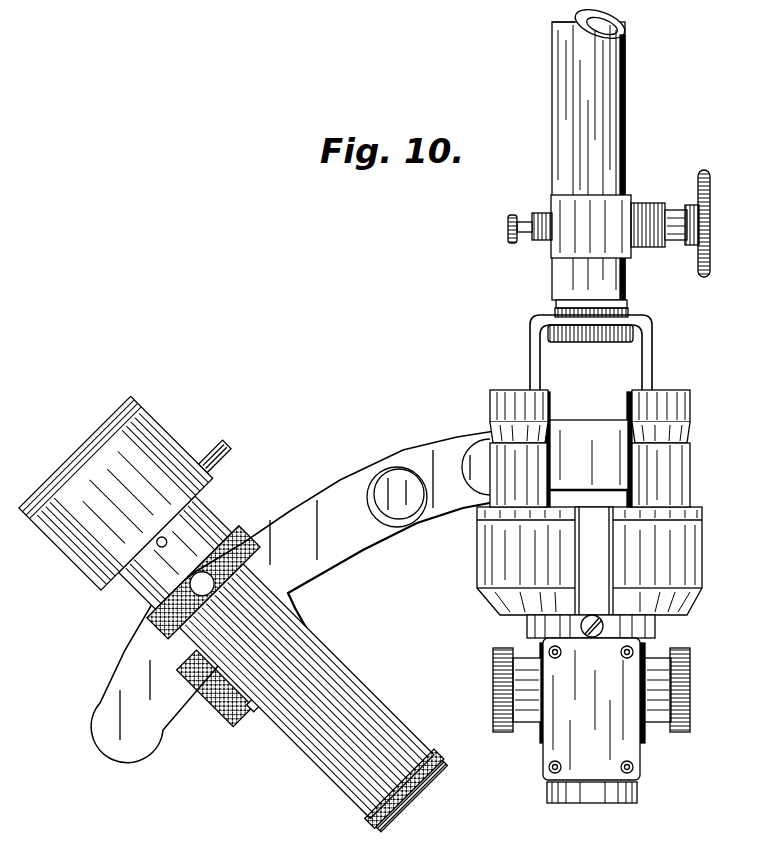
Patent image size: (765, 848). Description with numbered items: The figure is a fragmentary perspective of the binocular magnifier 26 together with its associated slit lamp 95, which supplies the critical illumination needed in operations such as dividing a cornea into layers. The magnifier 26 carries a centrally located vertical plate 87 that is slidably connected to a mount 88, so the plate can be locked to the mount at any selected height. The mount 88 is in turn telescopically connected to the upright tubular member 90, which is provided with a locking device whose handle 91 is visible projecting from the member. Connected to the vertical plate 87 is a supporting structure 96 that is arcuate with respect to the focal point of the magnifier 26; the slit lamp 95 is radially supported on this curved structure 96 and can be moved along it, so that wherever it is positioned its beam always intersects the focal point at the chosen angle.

The binocular magnifier 26 is at (478, 571).
The vertical plate 87 is at (602, 422).
The mount 88 is at (655, 355).
The tubular member 90 is at (624, 132).
The handle 91 is at (710, 258).
The slit lamp 95 is at (182, 440).
The supporting structure 96 is at (342, 479).